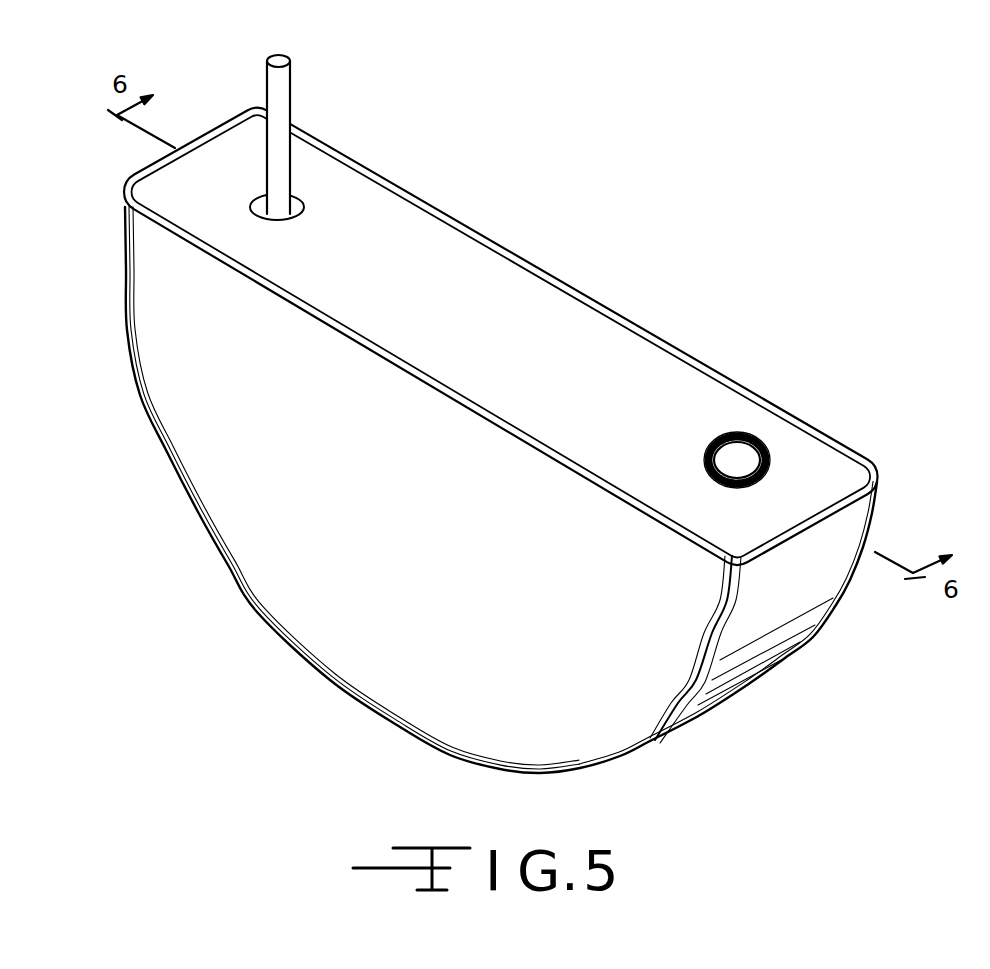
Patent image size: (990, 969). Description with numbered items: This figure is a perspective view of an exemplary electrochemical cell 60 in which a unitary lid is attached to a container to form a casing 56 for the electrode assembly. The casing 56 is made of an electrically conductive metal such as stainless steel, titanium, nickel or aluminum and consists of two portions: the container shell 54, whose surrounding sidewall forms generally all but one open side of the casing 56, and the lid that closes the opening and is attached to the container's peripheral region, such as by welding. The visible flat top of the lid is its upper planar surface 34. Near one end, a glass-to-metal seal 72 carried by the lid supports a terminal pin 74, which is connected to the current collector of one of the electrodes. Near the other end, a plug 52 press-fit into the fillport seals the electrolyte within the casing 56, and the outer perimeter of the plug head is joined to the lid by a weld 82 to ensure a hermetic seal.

The upper planar surface 34 is at (565, 345).
The plug 52 is at (741, 457).
The container shell 54 is at (227, 513).
The casing 56 is at (533, 230).
The electrochemical cell 60 is at (477, 399).
The glass-to-metal seal 72 is at (297, 210).
The terminal pin 74 is at (282, 85).
The weld 82 is at (707, 448).